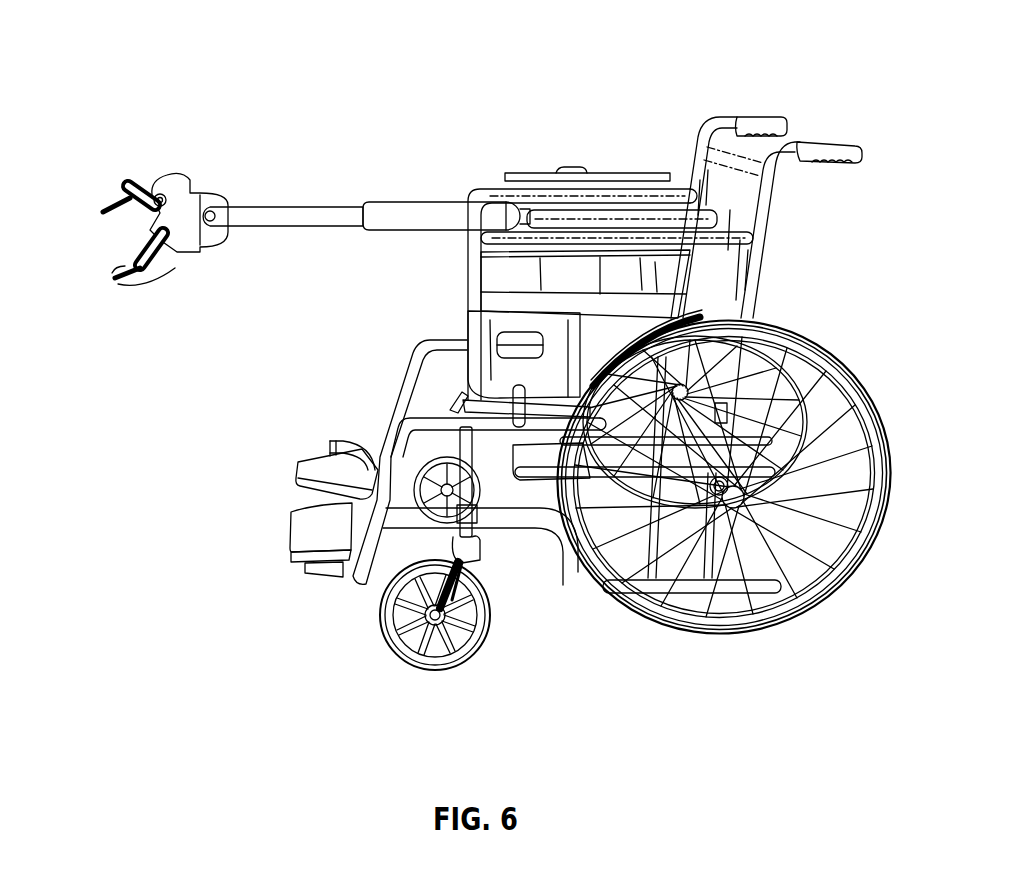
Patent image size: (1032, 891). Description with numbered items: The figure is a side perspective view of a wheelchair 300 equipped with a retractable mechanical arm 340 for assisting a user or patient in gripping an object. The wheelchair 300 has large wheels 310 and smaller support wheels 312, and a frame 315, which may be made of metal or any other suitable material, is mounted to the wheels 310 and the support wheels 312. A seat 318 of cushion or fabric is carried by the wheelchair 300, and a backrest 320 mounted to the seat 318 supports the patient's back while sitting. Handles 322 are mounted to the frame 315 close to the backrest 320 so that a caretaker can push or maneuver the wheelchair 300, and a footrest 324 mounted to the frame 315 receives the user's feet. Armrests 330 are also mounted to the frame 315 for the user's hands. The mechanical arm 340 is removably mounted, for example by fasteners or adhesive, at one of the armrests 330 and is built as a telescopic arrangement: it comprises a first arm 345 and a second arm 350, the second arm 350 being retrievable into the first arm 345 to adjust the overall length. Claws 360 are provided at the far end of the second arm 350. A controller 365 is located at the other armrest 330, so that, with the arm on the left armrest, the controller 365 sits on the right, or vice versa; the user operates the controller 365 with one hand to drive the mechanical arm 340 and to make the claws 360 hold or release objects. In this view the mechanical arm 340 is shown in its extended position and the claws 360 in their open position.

The wheelchair 300 is at (225, 40).
The wheels 310 is at (712, 632).
The support wheels 312 is at (410, 645).
The frame 315 is at (512, 532).
The seat 318 is at (577, 303).
The backrest 320 is at (740, 175).
The handles 322 is at (848, 146).
The footrest 324 is at (304, 535).
The armrests 330 is at (606, 215).
The mechanical arm 340 is at (436, 178).
The first arm 345 is at (440, 222).
The second arm 350 is at (295, 222).
The claws 360 is at (108, 213).
The controller 365 is at (576, 167).